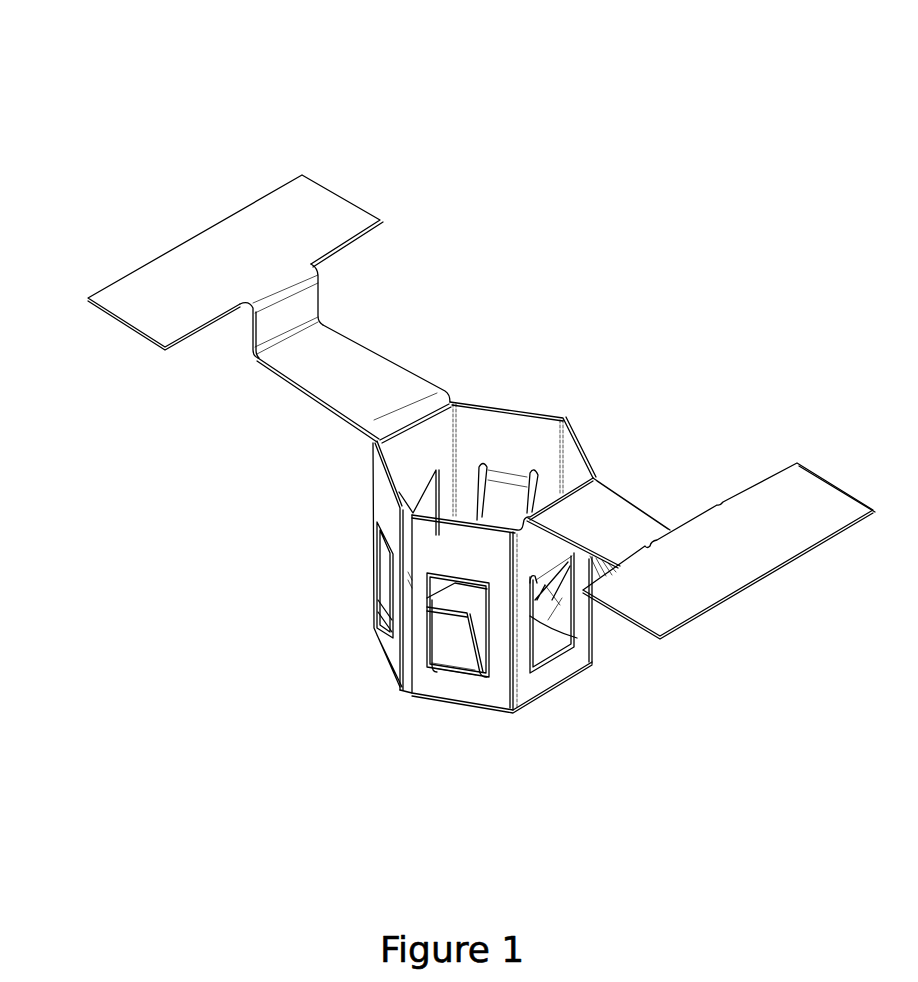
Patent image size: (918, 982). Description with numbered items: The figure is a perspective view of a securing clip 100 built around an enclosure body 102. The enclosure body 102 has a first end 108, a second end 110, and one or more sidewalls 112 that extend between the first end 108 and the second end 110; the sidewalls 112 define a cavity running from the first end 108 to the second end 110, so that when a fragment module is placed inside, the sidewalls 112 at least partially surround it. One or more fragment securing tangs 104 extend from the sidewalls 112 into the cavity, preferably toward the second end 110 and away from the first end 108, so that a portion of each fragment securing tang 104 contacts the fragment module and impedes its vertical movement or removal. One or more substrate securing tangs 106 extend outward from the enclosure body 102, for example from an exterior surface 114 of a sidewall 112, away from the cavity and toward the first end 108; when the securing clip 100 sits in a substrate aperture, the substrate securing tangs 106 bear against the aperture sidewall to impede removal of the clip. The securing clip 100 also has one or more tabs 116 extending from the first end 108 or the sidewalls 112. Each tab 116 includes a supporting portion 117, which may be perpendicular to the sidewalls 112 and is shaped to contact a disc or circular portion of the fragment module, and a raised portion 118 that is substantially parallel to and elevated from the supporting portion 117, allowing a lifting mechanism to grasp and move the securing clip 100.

The securing clip 100 is at (104, 54).
The enclosure body 102 is at (488, 435).
The fragment module securing tang 104 is at (577, 637).
The substrate securing tang 106 is at (450, 650).
The first end 108 is at (582, 446).
The second end 110 is at (480, 706).
The sidewall 112 is at (563, 668).
The exterior surface 114 is at (387, 512).
The tab 116 is at (266, 322).
The supporting portion 117 is at (392, 390).
The raised portion 118 is at (212, 248).